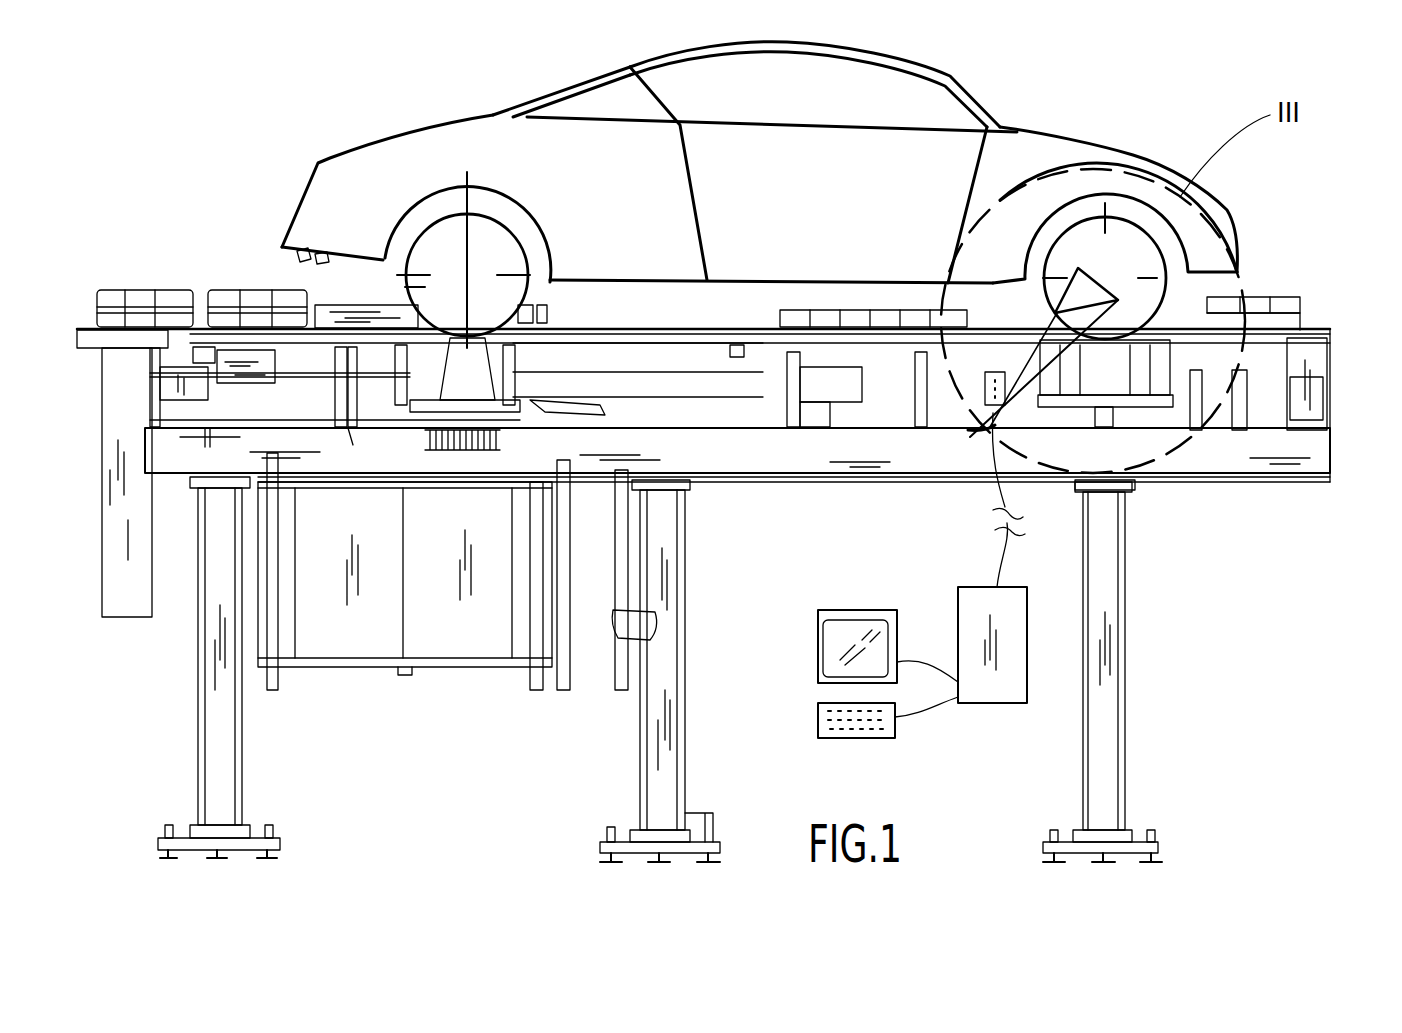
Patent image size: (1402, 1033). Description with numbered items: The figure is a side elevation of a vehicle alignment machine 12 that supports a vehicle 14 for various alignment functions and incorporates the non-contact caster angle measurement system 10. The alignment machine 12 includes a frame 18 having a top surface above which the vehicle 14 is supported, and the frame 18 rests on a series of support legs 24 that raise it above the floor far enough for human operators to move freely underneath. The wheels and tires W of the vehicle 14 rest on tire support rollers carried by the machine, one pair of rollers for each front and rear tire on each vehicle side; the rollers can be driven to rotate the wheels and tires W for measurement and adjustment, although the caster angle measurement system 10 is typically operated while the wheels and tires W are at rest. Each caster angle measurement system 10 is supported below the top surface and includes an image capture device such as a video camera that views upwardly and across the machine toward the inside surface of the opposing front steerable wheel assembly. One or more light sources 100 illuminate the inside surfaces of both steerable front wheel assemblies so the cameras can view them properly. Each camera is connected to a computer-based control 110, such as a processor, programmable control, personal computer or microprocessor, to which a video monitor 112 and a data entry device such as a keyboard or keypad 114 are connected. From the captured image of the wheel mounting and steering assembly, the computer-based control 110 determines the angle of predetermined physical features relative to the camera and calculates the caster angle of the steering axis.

The non-contact caster angle measurement system 10 is at (985, 425).
The vehicle alignment machine 12 is at (1333, 353).
The vehicle 14 is at (945, 78).
The frame 18 is at (1302, 462).
The support legs 24 is at (217, 748).
The wheels and tires W is at (407, 285).
The light sources 100 is at (975, 262).
The computer-based control 110 is at (995, 690).
The video monitor 112 is at (817, 633).
The keyboard or keypad 114 is at (817, 710).